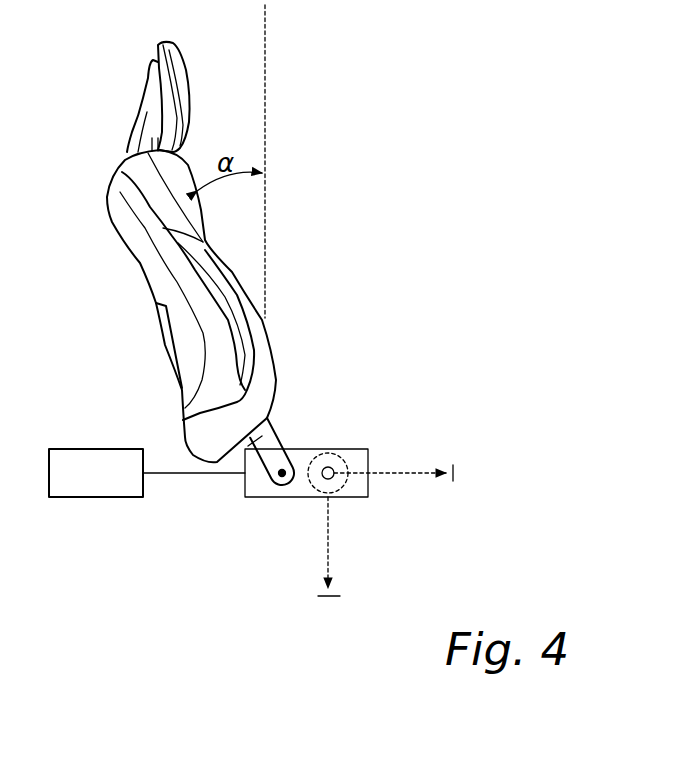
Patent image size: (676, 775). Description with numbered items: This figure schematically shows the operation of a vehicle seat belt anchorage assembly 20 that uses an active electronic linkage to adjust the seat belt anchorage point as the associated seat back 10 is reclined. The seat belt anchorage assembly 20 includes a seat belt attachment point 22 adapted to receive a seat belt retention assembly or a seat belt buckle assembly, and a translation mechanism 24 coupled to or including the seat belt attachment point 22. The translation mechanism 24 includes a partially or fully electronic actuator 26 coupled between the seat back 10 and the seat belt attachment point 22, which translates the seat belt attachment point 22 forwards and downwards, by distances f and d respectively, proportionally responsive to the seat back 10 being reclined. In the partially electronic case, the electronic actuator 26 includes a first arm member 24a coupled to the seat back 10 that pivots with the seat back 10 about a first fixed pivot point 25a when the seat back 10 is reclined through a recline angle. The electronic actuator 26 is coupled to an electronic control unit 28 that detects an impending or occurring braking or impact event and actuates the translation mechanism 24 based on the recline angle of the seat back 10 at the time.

The seat back 10 is at (212, 252).
The seat belt anchorage assembly 20 is at (301, 514).
The seat belt attachment point 22 is at (333, 449).
The translation mechanism 24 is at (302, 390).
The first arm member 24a is at (254, 438).
The first fixed pivot point 25a is at (287, 478).
The electronic actuator 26 is at (303, 498).
The electronic control unit 28 is at (77, 498).